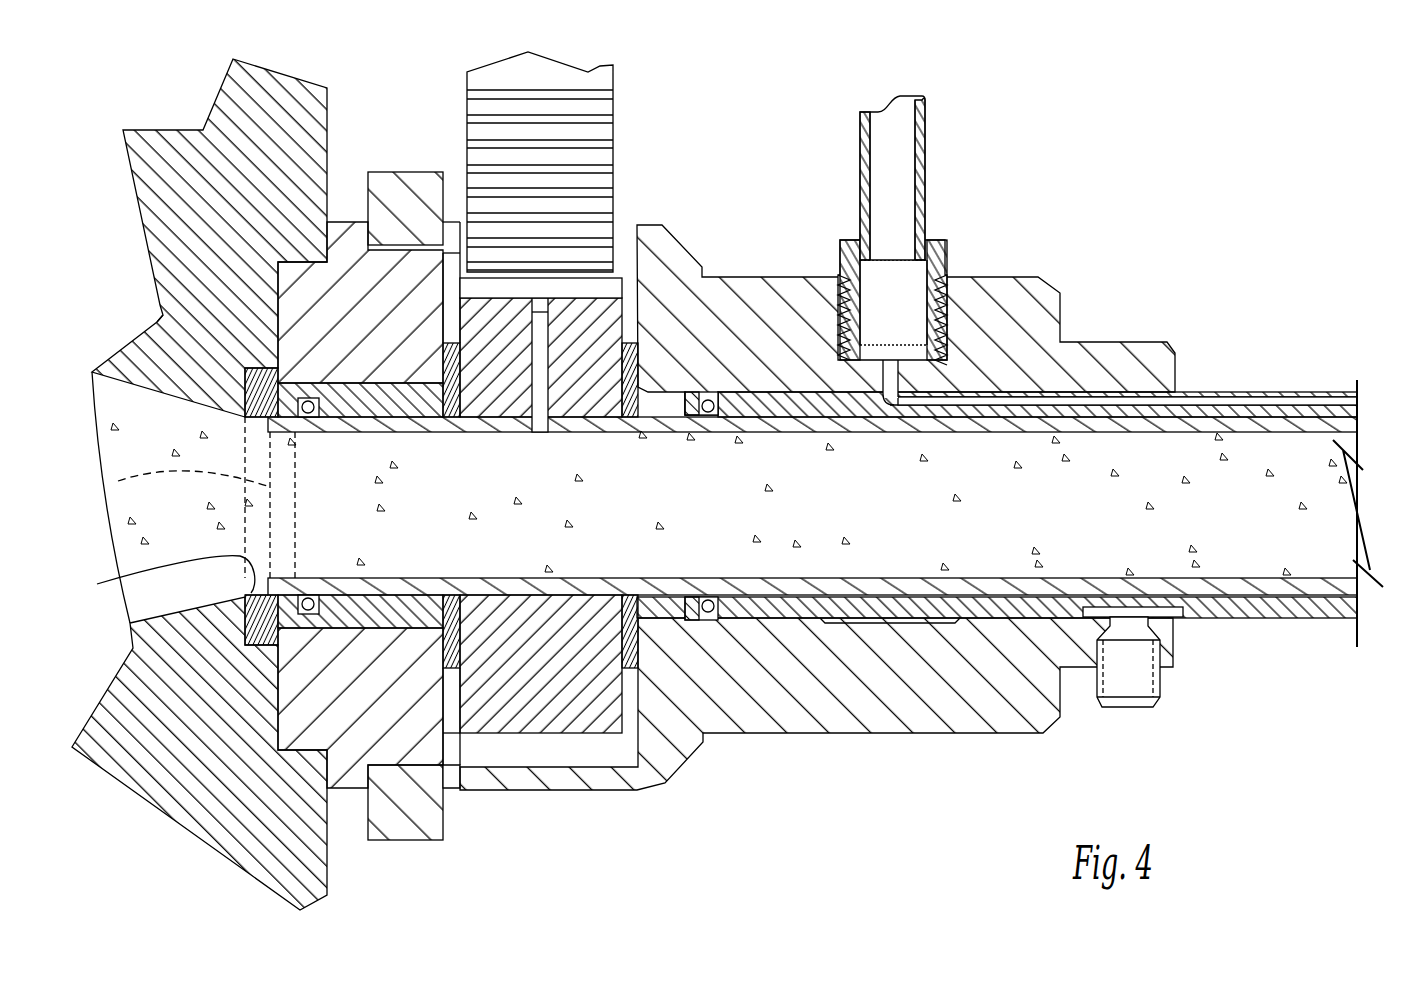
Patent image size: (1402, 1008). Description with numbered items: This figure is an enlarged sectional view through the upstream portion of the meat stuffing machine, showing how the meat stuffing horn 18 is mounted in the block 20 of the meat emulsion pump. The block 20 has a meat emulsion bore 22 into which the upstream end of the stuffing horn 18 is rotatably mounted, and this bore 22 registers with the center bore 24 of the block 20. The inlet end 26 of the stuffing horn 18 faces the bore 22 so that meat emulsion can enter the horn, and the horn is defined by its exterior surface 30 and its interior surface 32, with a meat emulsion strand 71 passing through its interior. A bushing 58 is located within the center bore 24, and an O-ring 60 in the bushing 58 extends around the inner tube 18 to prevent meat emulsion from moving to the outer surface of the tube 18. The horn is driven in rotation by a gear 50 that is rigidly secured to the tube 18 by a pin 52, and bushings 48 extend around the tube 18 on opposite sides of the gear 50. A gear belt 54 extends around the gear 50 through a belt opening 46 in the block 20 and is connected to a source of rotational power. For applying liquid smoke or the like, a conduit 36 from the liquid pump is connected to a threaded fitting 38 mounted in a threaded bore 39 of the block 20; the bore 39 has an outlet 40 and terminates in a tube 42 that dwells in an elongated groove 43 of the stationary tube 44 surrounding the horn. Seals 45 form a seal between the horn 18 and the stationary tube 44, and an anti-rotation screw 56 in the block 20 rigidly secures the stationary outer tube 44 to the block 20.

The meat stuffing horn 18 is at (481, 578).
The block 20 is at (882, 723).
The meat emulsion bore 22 is at (157, 617).
The bore 24 is at (160, 577).
The inlet end 26 is at (118, 481).
The exterior surface 30 is at (1318, 590).
The interior surface 32 is at (1255, 578).
The conduit 36 is at (928, 192).
The threaded fitting 38 is at (947, 247).
The threaded bore 39 is at (855, 303).
The outlet 40 is at (902, 382).
The tube 42 is at (1326, 388).
The elongated groove 43 is at (888, 408).
The stationary tube 44 is at (1270, 623).
The seals 45 is at (708, 412).
The belt opening 46 is at (630, 228).
The bushings 48 is at (452, 405).
The gear 50 is at (490, 400).
The pin 52 is at (540, 430).
The gear belt 54 is at (606, 148).
The anti-rotation screw 56 is at (1131, 700).
The bushing 58 is at (248, 366).
The O-ring 60 is at (309, 414).
The meat emulsion strand 71 is at (1318, 504).